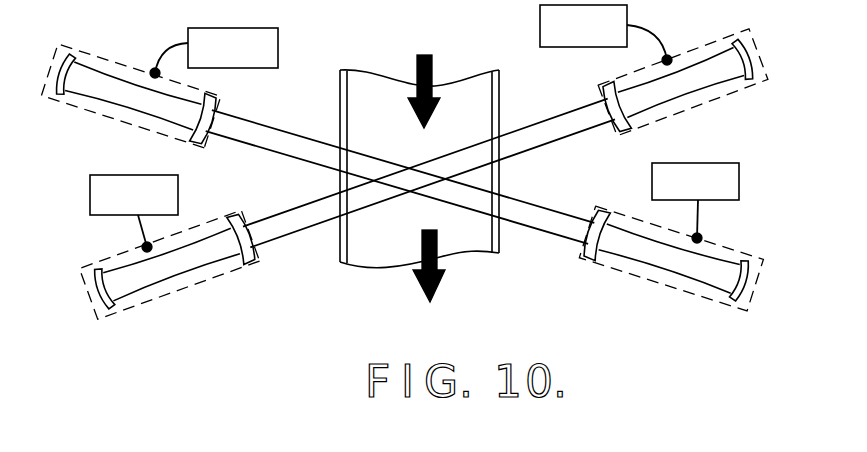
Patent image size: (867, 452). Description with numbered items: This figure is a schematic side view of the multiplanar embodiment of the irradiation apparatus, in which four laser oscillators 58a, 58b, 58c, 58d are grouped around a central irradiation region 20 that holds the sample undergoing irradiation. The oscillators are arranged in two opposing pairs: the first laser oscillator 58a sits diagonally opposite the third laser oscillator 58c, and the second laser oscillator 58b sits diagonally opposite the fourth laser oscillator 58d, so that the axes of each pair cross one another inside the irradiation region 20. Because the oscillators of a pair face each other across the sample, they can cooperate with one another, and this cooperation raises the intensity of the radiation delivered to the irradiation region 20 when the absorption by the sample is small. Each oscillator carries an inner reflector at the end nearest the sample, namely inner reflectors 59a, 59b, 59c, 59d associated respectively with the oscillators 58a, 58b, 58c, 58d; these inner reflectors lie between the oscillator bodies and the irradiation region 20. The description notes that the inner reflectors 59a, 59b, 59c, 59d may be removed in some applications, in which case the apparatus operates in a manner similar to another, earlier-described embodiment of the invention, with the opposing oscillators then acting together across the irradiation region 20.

The irradiation region 20 is at (407, 183).
The laser oscillator 58a is at (686, 300).
The laser oscillator 58b is at (765, 46).
The laser oscillator 58c is at (125, 57).
The laser oscillator 58d is at (163, 297).
The inner reflector 59a is at (590, 260).
The inner reflector 59b is at (612, 117).
The inner reflector 59c is at (192, 140).
The inner reflector 59d is at (240, 262).